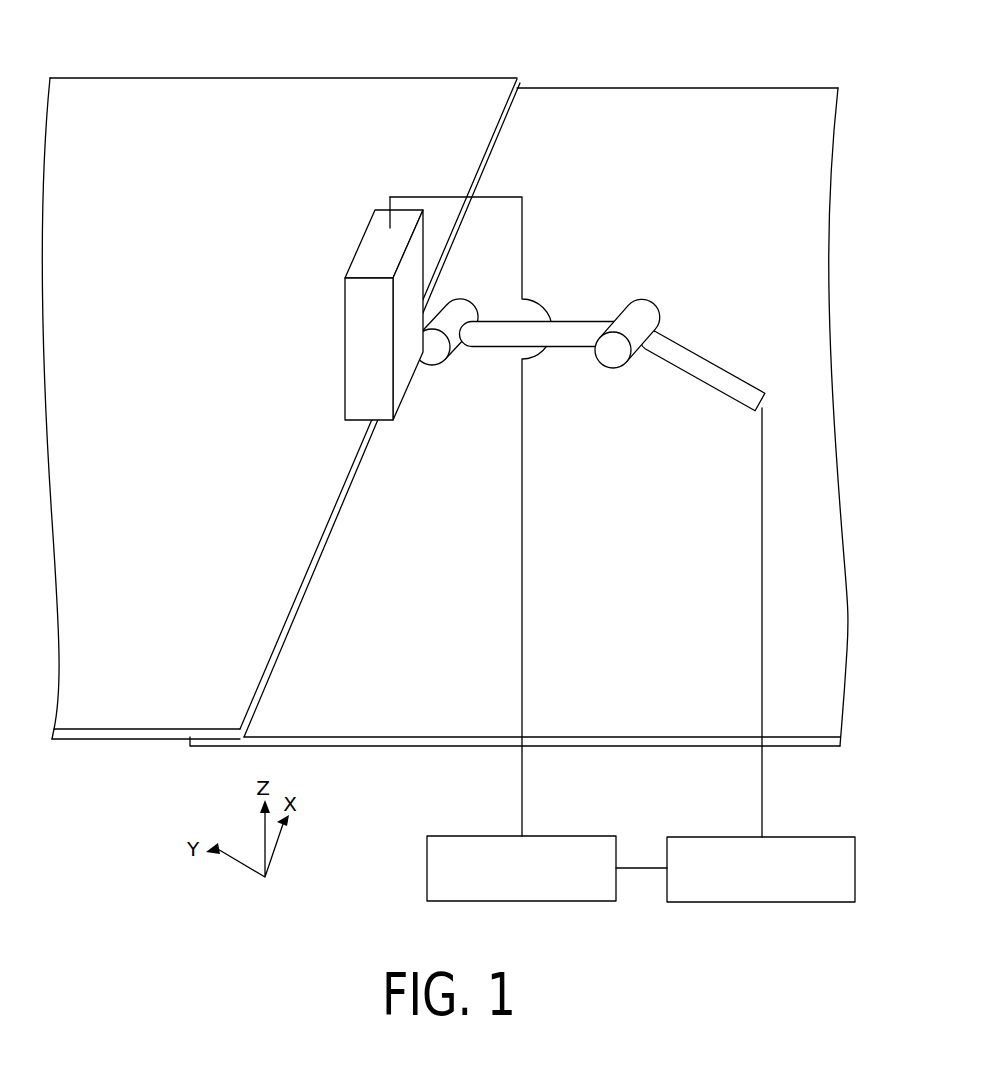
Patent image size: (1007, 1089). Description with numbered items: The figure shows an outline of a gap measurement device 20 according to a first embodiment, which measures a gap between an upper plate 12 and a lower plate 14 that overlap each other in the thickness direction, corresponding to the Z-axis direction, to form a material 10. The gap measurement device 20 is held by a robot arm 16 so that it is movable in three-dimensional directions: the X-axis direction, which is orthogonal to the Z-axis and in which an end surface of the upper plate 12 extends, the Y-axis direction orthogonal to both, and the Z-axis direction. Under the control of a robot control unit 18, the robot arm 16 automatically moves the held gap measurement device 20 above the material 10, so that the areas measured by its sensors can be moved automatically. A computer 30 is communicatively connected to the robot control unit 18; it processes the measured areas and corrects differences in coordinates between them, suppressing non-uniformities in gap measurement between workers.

The material 10 is at (131, 92).
The upper plate 12 is at (243, 94).
The lower plate 14 is at (655, 104).
The robot arm 16 is at (736, 388).
The robot control unit 18 is at (818, 818).
The gap measurement device 20 is at (346, 236).
The computer 30 is at (584, 818).